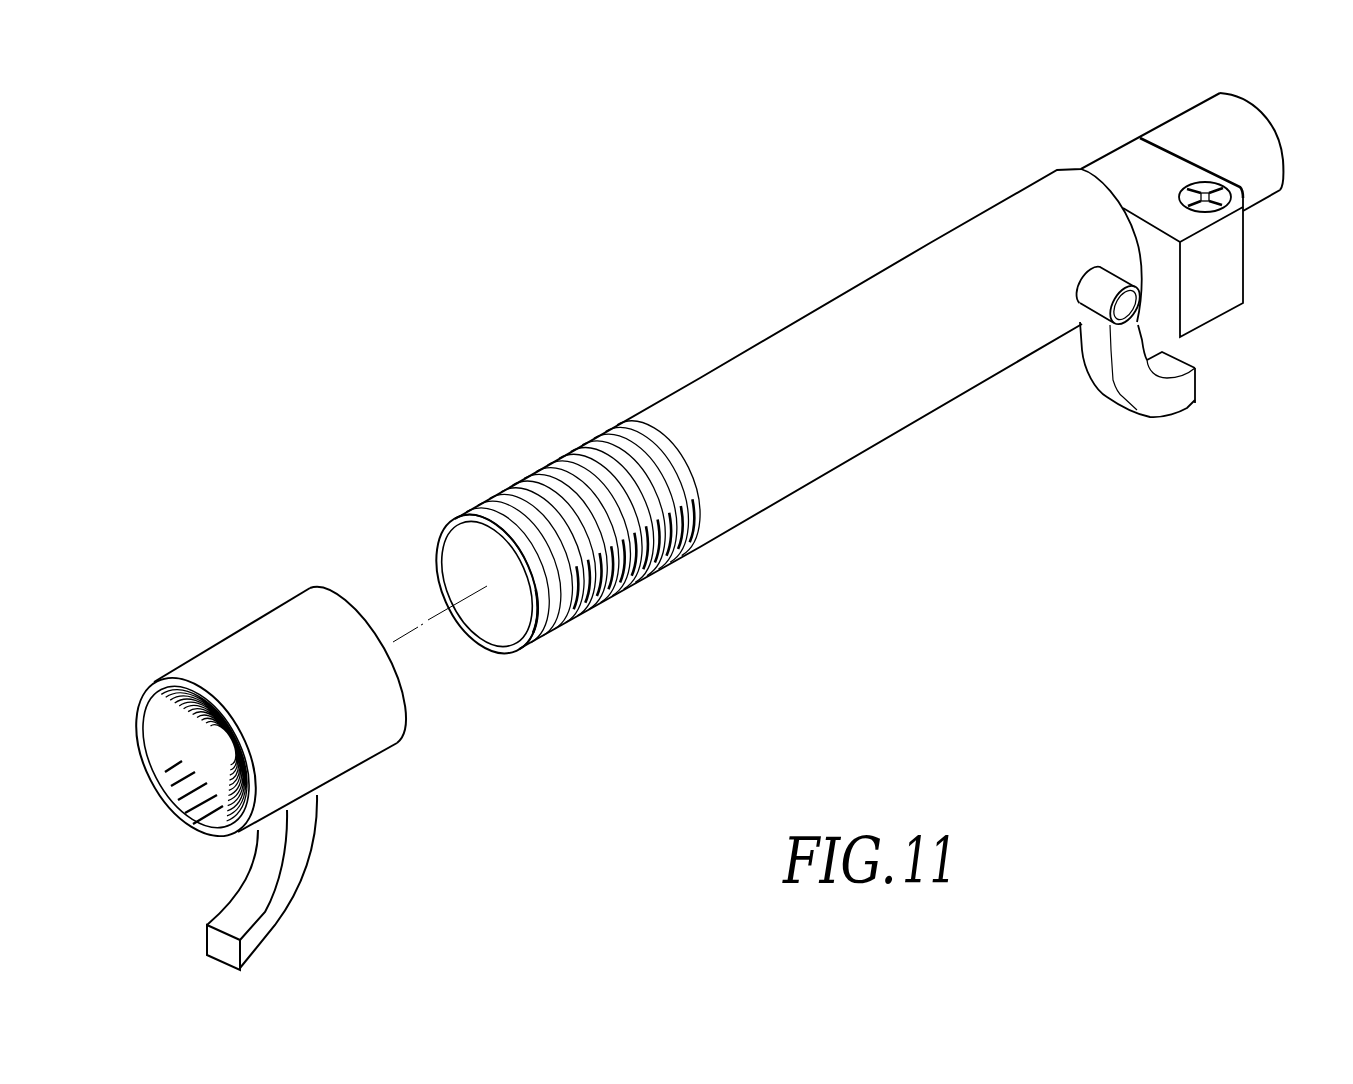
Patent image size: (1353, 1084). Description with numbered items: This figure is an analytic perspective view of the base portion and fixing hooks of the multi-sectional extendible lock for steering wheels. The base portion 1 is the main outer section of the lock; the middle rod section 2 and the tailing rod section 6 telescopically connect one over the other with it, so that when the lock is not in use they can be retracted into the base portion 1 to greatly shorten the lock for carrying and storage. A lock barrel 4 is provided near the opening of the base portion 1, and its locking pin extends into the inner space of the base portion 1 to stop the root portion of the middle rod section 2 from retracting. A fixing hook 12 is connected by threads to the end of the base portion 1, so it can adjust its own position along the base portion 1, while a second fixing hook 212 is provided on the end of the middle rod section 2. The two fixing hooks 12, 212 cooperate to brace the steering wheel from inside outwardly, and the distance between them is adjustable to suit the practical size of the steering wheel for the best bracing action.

The base portion 1 is at (798, 467).
The middle rod section 2 is at (1150, 158).
The lock barrel 4 is at (1213, 203).
The tailing rod section 6 is at (1270, 187).
The fixing hook 12 is at (238, 655).
The fixing hook 212 is at (1130, 383).